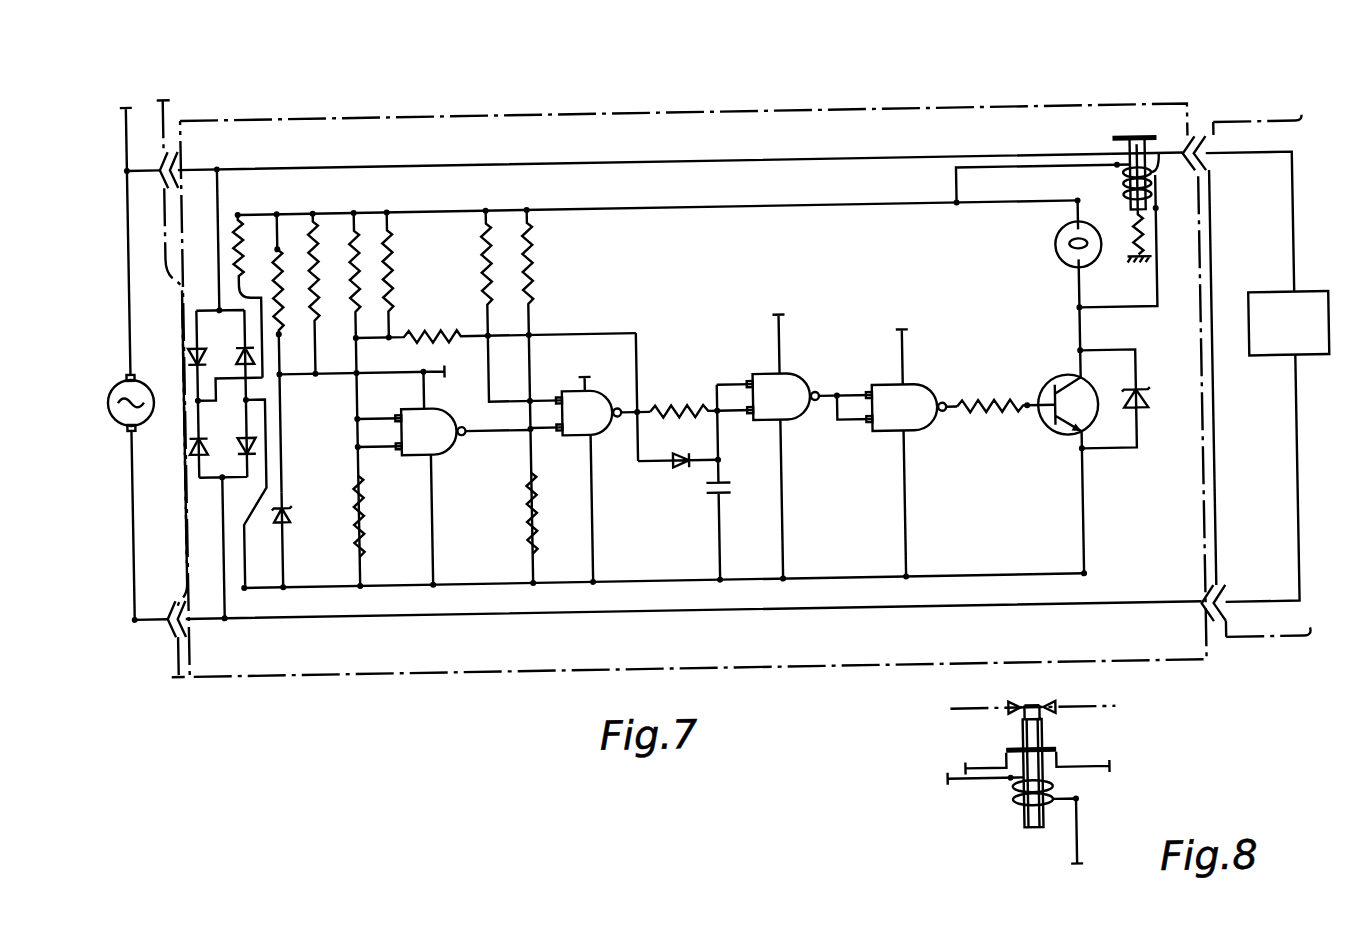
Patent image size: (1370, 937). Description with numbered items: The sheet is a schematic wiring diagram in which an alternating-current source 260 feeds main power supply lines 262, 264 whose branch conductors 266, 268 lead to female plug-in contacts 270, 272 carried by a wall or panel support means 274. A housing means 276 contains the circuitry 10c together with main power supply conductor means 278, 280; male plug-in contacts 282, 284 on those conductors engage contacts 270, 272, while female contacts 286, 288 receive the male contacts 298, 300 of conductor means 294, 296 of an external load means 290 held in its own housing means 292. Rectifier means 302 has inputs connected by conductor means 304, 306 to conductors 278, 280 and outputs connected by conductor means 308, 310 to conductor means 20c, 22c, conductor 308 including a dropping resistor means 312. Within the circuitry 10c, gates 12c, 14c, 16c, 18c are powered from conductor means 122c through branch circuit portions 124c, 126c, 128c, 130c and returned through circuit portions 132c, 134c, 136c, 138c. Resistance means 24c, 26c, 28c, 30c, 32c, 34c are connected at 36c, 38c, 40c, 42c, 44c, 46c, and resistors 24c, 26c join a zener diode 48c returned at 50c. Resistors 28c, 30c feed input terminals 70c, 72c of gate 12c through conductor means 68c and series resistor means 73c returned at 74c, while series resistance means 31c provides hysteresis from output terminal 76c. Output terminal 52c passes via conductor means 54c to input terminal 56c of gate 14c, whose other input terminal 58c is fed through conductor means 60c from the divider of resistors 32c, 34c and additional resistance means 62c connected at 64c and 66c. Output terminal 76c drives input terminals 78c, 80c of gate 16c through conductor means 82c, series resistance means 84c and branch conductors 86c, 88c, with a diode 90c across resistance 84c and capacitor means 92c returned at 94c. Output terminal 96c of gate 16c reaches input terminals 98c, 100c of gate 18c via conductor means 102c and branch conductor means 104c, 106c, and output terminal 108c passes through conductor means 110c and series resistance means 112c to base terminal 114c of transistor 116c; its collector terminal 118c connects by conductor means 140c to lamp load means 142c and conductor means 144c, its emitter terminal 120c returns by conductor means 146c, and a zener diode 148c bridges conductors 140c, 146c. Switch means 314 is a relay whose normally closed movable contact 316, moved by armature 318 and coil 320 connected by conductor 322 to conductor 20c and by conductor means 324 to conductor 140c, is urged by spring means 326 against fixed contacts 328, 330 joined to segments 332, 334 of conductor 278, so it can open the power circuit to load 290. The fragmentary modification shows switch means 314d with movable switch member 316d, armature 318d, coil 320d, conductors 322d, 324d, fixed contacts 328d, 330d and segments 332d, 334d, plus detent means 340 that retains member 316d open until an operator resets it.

In FIG. 7, the circuitry 10c is at (756, 203).
In FIG. 7, the integrated circuit gate 12c is at (432, 448).
In FIG. 7, the integrated circuit gate 14c is at (584, 434).
In FIG. 7, the integrated circuit gate 16c is at (794, 432).
In FIG. 7, the integrated circuit gate 18c is at (920, 434).
In FIG. 7, the main electrical conductor means 20c is at (638, 207).
In FIG. 7, the main electrical conductor means 22c is at (985, 582).
In FIG. 7, the resistance means 24c is at (282, 268).
In FIG. 7, the resistance means 26c is at (314, 310).
In FIG. 7, the resistance means 28c is at (362, 270).
In FIG. 7, the resistance means 30c is at (394, 270).
In FIG. 7, the series resistance means 31c is at (428, 334).
In FIG. 7, the resistance means 32c is at (486, 258).
In FIG. 7, the resistance means 34c is at (535, 262).
In FIG. 7, the connection point 36c is at (281, 205).
In FIG. 7, the connection point 38c is at (318, 205).
In FIG. 7, the connection point 40c is at (360, 205).
In FIG. 7, the connection point 42c is at (392, 209).
In FIG. 7, the connection point 44c is at (489, 205).
In FIG. 7, the connection point 46c is at (532, 206).
In FIG. 7, the zener diode 48c is at (288, 500).
In FIG. 7, the connection point 50c is at (284, 578).
In FIG. 7, the output terminal 52c is at (470, 427).
In FIG. 7, the conductor means 54c is at (496, 430).
In FIG. 7, the input terminal 56c is at (558, 428).
In FIG. 7, the input terminal 58c is at (558, 396).
In FIG. 7, the conductor means 60c is at (532, 392).
In FIG. 7, the additional resistance means 62c is at (526, 508).
In FIG. 7, the connection point 64c is at (492, 392).
In FIG. 7, the connection point 66c is at (585, 576).
In FIG. 7, the conductor means 68c is at (356, 386).
In FIG. 7, the input terminal 70c is at (398, 410).
In FIG. 7, the input terminal 72c is at (406, 446).
In FIG. 7, the series resistor means 73c is at (362, 523).
In FIG. 7, the connection point 74c is at (358, 575).
In FIG. 7, the output terminal 76c is at (620, 420).
In FIG. 7, the input terminal 78c is at (762, 378).
In FIG. 7, the input terminal 80c is at (752, 414).
In FIG. 7, the conductor means 82c is at (642, 400).
In FIG. 7, the series resistance means 84c is at (676, 404).
In FIG. 7, the branch conductor 86c is at (748, 384).
In FIG. 7, the branch conductor 88c is at (722, 418).
In FIG. 7, the diode 90c is at (674, 464).
In FIG. 7, the capacitor means 92c is at (714, 495).
In FIG. 7, the connection point 94c is at (716, 574).
In FIG. 7, the output terminal 96c is at (818, 392).
In FIG. 7, the input terminal 98c is at (870, 394).
In FIG. 7, the input terminal 100c is at (896, 438).
In FIG. 7, the conductor means 102c is at (836, 394).
In FIG. 7, the branch conductor means 104c is at (866, 394).
In FIG. 7, the branch conductor means 106c is at (840, 428).
In FIG. 7, the output terminal 108c is at (948, 402).
In FIG. 7, the conductor means 110c is at (952, 416).
In FIG. 7, the series resistance means 112c is at (992, 406).
In FIG. 7, the base terminal 114c is at (1050, 418).
In FIG. 7, the transistor 116c is at (1088, 398).
In FIG. 7, the collector terminal 118c is at (1075, 385).
In FIG. 7, the emitter terminal 120c is at (1078, 456).
In FIG. 7, the conductor means 122c is at (368, 367).
In FIG. 7, the branch circuit portion 124c is at (428, 378).
In FIG. 7, the branch circuit portion 126c is at (588, 376).
In FIG. 7, the branch circuit portion 128c is at (784, 318).
In FIG. 7, the branch circuit portion 130c is at (906, 338).
In FIG. 7, the circuit portion 132c is at (432, 560).
In FIG. 7, the circuit portion 134c is at (592, 538).
In FIG. 7, the circuit portion 136c is at (784, 560).
In FIG. 7, the circuit portion 138c is at (906, 548).
In FIG. 7, the conductor means 140c is at (1080, 330).
In FIG. 7, the electrical load means 142c is at (1058, 262).
In FIG. 7, the conductor means 144c is at (1080, 222).
In FIG. 7, the conductor means 146c is at (1084, 528).
In FIG. 7, the zener diode 148c is at (1140, 440).
In FIG. 7, the source of electrical potential 260 is at (114, 386).
In FIG. 7, the conductor means 262 is at (131, 108).
In FIG. 7, the conductor means 264 is at (131, 632).
In FIG. 7, the branch conductor 266 is at (140, 160).
In FIG. 7, the branch conductor 268 is at (140, 609).
In FIG. 7, the female plug-in contact 270 is at (158, 166).
In FIG. 7, the female plug-in contact 272 is at (174, 672).
In FIG. 7, the support means 274 is at (172, 100).
In FIG. 7, the housing means 276 is at (618, 112).
In FIG. 7, the main power supply conductor means 278 is at (686, 161).
In FIG. 7, the main power supply conductor means 280 is at (625, 614).
In FIG. 7, the male plug-in contact 282 is at (184, 148).
In FIG. 7, the male plug-in contact 284 is at (184, 628).
In FIG. 7, the female plug-in contact 286 is at (1193, 140).
In FIG. 7, the female plug-in contact 288 is at (1200, 624).
In FIG. 7, the electrical load means 290 is at (1296, 375).
In FIG. 7, the housing means 292 is at (1262, 131).
In FIG. 7, the conductor means 294 is at (1296, 210).
In FIG. 7, the conductor means 296 is at (1215, 510).
In FIG. 7, the male plug-in contact 298 is at (1212, 138).
In FIG. 7, the male plug-in contact 300 is at (1222, 608).
In FIG. 7, the rectifier means 302 is at (190, 386).
In FIG. 7, the conductor means 304 is at (241, 206).
In FIG. 7, the conductor means 306 is at (228, 606).
In FIG. 7, the conductor means 308 is at (226, 463).
In FIG. 7, the conductor means 310 is at (243, 512).
In FIG. 7, the dropping resistor means 312 is at (238, 262).
In FIG. 7, the switch means 314 is at (1126, 142).
In FIG. 7, the movable switch contact 316 is at (1132, 146).
In FIG. 7, the armature 318 is at (1136, 215).
In FIG. 7, the winding or coil 320 is at (1126, 186).
In FIG. 7, the conductor 322 is at (978, 178).
In FIG. 7, the conductor means 324 is at (1090, 316).
In FIG. 7, the spring means 326 is at (1130, 264).
In FIG. 7, the fixed contact 328 is at (1132, 158).
In FIG. 7, the fixed contact 330 is at (1164, 146).
In FIG. 7, the conductor segment 332 is at (928, 158).
In FIG. 7, the conductor segment 334 is at (1176, 190).
In FIG. 8, the switch means 314d is at (1140, 760).
In FIG. 8, the movable switch member 316d is at (1012, 722).
In FIG. 8, the armature 318d is at (1022, 815).
In FIG. 8, the coil 320d is at (1006, 806).
In FIG. 8, the conductor 322d is at (945, 788).
In FIG. 8, the conductor means 324d is at (1070, 848).
In FIG. 8, the fixed contact 328d is at (1008, 756).
In FIG. 8, the fixed contact 330d is at (1052, 756).
In FIG. 8, the conductor segment 332d is at (965, 772).
In FIG. 8, the conductor segment 334d is at (1088, 780).
In FIG. 8, the detent means 340 is at (1042, 728).